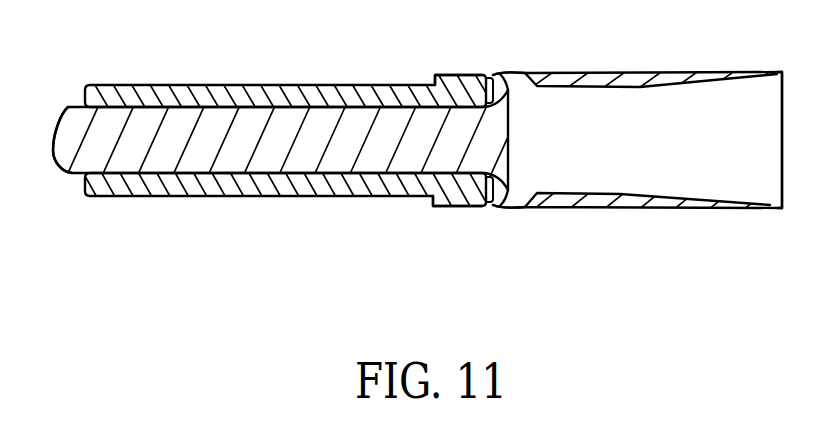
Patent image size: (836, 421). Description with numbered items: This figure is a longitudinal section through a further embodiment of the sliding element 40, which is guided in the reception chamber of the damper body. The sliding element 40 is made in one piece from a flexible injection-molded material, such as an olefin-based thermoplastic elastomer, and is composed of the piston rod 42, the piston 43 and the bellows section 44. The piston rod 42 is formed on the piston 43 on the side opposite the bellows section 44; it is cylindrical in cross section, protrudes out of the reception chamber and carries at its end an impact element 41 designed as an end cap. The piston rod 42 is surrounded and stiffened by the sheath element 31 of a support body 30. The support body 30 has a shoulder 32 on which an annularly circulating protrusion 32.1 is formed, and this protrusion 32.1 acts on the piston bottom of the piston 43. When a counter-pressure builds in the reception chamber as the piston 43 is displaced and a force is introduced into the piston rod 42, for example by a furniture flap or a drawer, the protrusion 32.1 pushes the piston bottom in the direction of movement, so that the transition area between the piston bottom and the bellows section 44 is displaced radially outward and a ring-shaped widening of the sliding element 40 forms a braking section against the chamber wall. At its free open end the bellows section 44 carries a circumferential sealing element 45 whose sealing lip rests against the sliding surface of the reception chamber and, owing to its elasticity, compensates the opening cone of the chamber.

The support body 30 is at (248, 206).
The sheath element 31 is at (335, 97).
The shoulder 32 is at (443, 204).
The protrusion 32.1 is at (472, 205).
The sliding element 40 is at (636, 161).
The impact element 41 is at (61, 120).
The piston rod 42 is at (181, 112).
The piston 43 is at (497, 72).
The bellows section 44 is at (614, 80).
The sealing element 45 is at (768, 70).